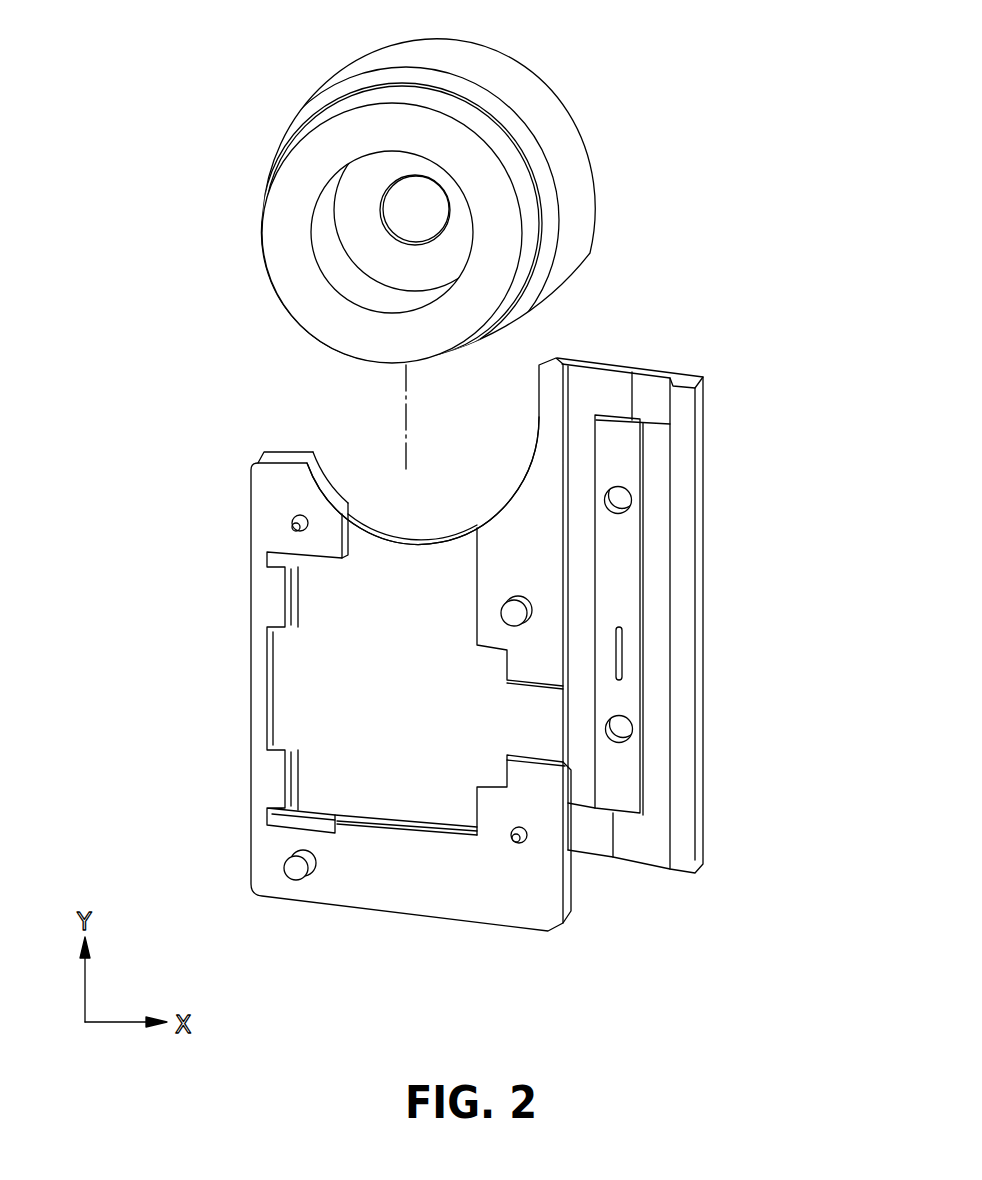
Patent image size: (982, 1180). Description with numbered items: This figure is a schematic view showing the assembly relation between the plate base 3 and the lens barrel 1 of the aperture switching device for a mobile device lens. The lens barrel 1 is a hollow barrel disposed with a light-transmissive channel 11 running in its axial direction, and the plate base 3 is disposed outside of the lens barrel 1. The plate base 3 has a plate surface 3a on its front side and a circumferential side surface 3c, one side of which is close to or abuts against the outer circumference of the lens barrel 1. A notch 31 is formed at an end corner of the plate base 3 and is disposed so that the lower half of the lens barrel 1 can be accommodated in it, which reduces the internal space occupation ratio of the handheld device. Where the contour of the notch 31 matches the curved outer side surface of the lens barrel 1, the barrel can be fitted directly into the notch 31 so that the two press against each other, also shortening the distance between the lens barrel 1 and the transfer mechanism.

The lens barrel 1 is at (395, 255).
The light-transmissive channel 11 is at (397, 199).
The plate base 3 is at (524, 672).
The plate surface 3a is at (479, 904).
The circumferential side surface 3c is at (703, 598).
The notch 31 is at (437, 543).